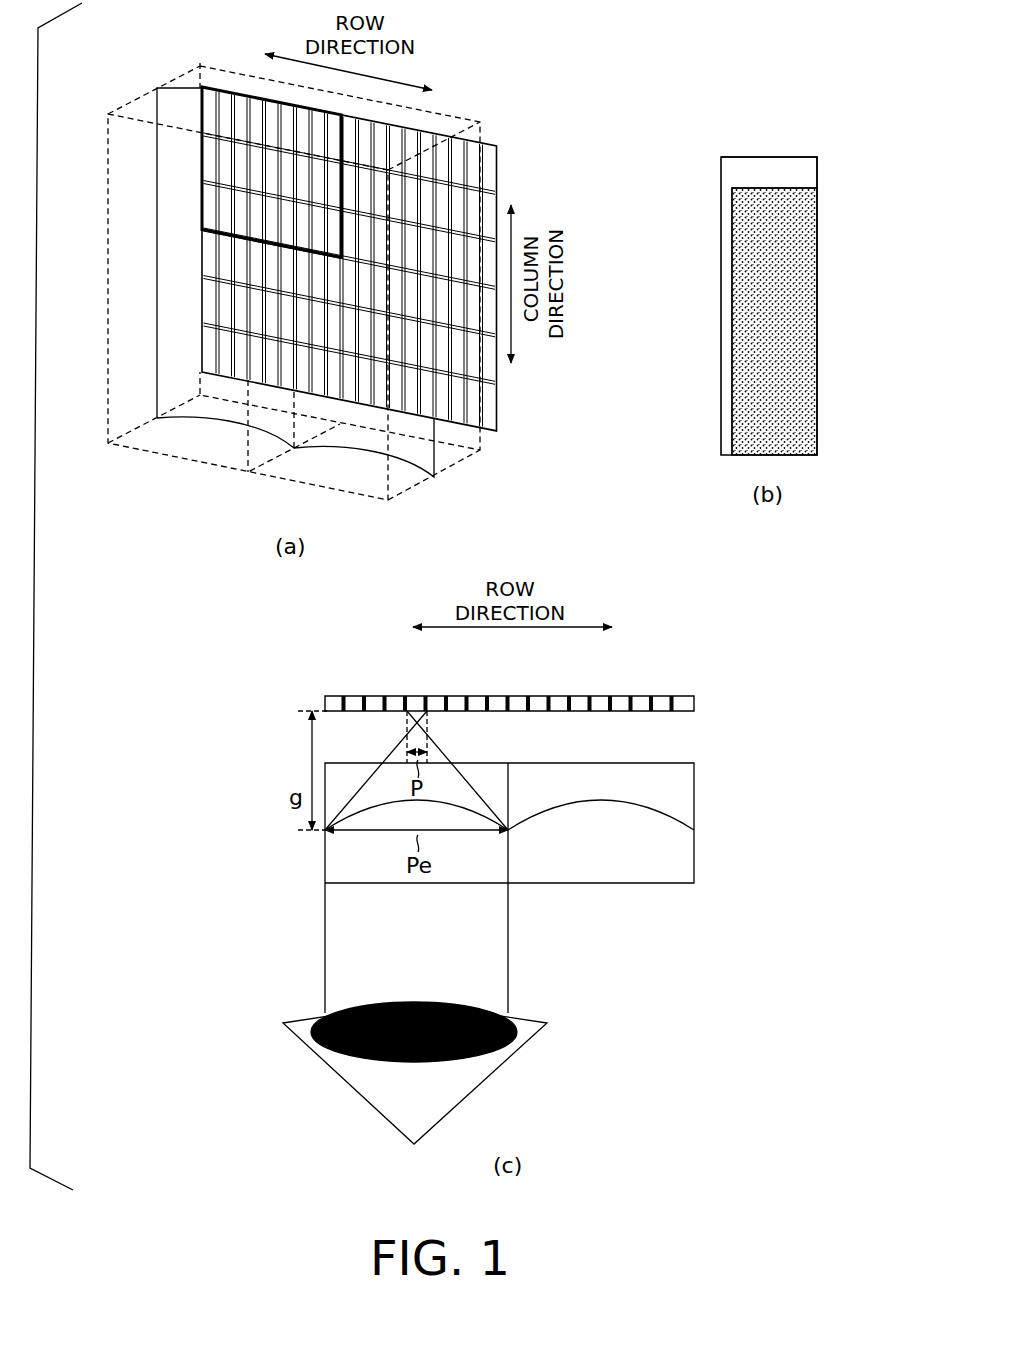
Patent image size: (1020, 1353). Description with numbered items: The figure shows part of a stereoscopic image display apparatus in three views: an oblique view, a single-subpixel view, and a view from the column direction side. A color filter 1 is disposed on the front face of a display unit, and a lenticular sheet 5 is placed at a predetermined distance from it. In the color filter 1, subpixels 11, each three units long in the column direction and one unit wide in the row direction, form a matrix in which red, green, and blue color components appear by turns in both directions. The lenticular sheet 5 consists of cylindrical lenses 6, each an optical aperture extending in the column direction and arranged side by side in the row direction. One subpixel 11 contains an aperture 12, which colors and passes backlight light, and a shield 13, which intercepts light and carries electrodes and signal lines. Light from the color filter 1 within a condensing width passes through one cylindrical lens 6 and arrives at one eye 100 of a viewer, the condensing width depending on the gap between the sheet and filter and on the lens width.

The color filter 1 is at (500, 197).
The lenticular sheet 5 is at (250, 474).
The cylindrical lens 6 is at (215, 438).
The subpixel 11 is at (483, 150).
The aperture 12 is at (748, 296).
The shield 13 is at (737, 176).
The eye 100 is at (320, 1060).